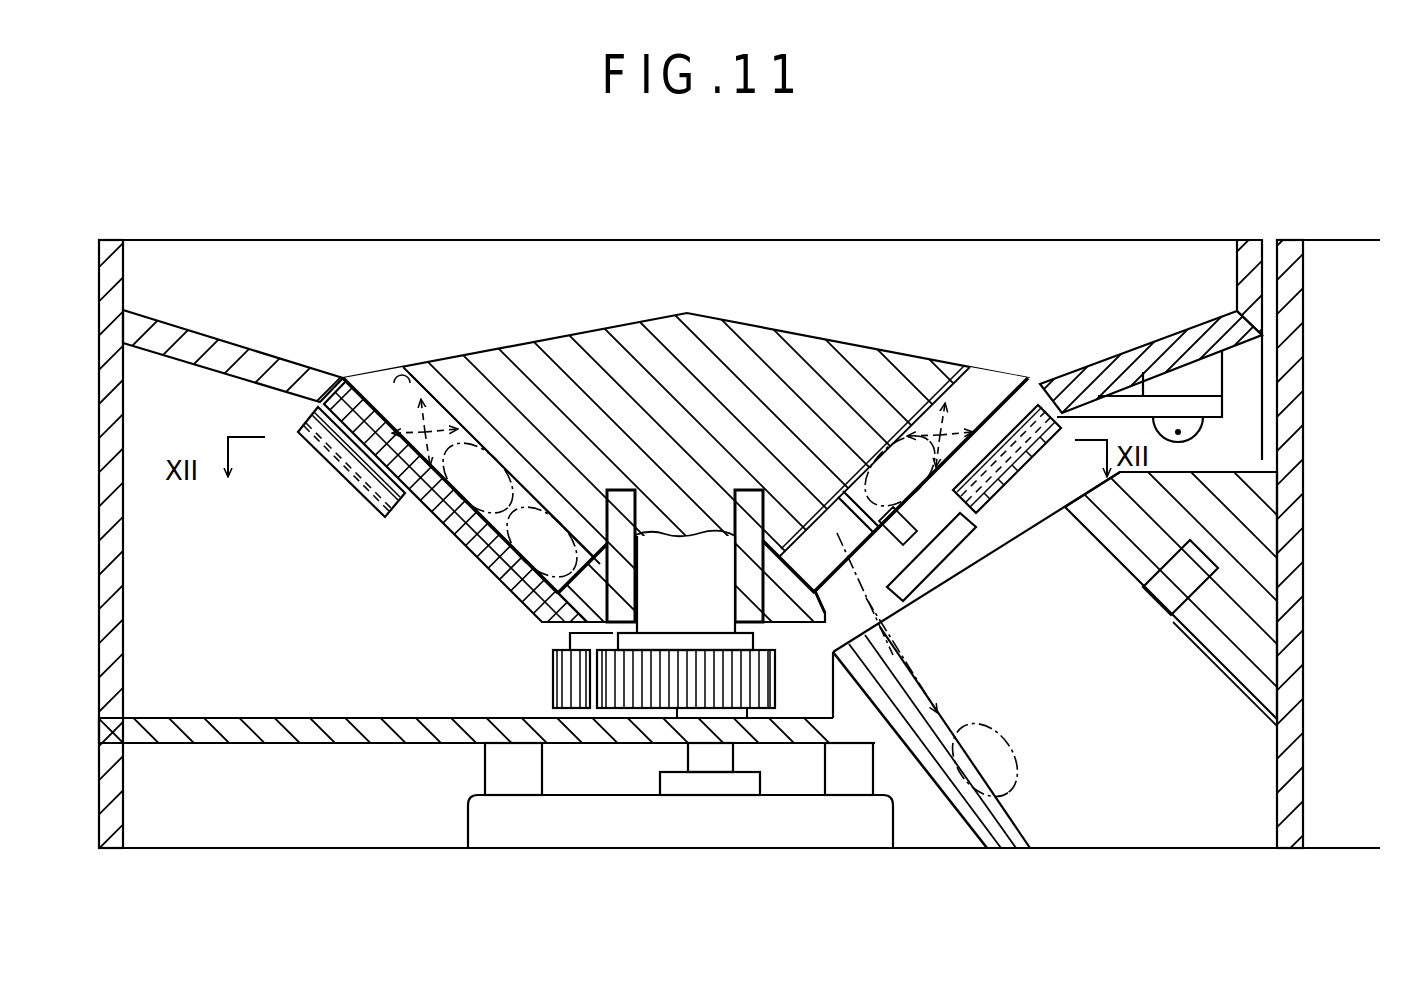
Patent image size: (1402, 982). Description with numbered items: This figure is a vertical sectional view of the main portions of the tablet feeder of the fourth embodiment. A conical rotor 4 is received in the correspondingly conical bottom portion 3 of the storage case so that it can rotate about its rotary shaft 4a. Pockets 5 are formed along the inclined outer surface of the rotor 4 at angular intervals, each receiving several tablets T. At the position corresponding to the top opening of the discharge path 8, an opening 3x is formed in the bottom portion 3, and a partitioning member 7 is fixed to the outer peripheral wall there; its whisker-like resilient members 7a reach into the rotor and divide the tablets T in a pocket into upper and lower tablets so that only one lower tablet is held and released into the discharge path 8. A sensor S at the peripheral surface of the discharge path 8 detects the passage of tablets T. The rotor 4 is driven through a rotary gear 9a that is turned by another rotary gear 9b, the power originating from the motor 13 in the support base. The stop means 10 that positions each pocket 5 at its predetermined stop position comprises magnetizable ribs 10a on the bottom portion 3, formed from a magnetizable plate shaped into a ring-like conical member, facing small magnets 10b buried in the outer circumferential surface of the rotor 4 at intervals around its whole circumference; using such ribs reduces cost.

The bottom portion 3 is at (433, 490).
The opening 3x is at (890, 607).
The rotor 4 is at (640, 340).
The rotary shaft 4a is at (683, 545).
The pocket 5 is at (400, 383).
The partitioning member 7 is at (968, 548).
The whisker-like resilient members 7a is at (903, 512).
The discharge path 8 is at (1230, 765).
The rotary gear 9a is at (636, 700).
The rotary gear 9b is at (575, 680).
The vibrating plate 10 is at (355, 558).
The magnetizable ribs 10a is at (345, 462).
The small magnets 10b is at (348, 492).
The motor 13 is at (726, 823).
The sensor S is at (1205, 585).
The tablets T is at (492, 566).